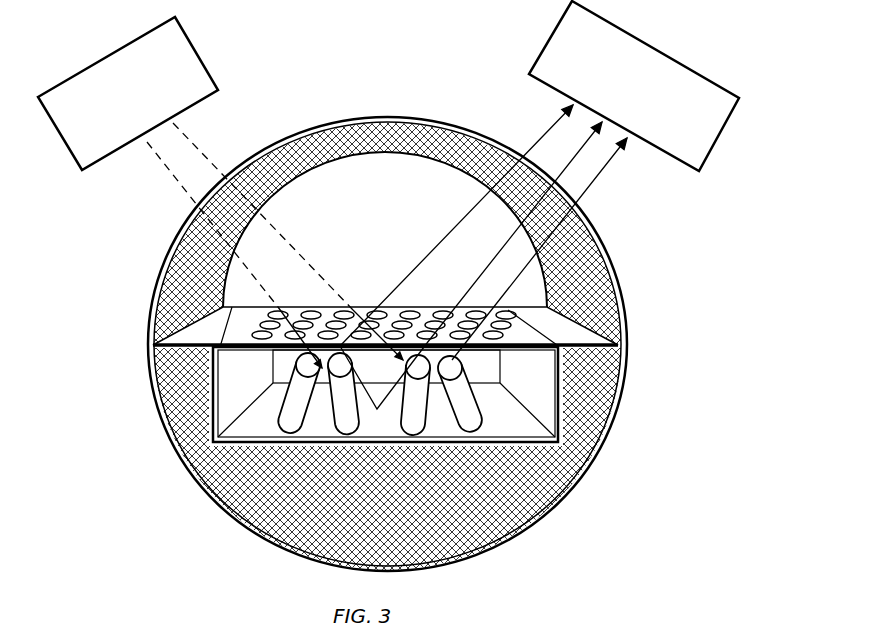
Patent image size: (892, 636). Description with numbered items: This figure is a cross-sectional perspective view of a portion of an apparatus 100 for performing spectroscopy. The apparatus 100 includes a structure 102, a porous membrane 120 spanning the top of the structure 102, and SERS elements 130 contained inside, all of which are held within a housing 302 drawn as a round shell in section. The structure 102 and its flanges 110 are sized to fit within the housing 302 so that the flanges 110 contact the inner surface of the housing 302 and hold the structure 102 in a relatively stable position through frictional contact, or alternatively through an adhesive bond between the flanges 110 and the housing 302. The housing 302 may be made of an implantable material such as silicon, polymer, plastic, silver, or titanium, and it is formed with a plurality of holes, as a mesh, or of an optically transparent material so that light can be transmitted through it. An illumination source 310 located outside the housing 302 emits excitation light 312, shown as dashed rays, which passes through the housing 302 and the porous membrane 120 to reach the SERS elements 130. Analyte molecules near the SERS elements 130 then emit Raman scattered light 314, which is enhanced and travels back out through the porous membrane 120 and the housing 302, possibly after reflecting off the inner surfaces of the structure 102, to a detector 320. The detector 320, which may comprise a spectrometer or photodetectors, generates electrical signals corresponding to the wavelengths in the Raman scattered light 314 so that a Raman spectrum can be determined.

The apparatus 100 is at (332, 60).
The structure 102 is at (202, 434).
The flanges 110 is at (580, 357).
The porous membrane 120 is at (548, 335).
The SERS elements 130 is at (438, 408).
The housing 302 is at (152, 372).
The illumination source 310 is at (128, 93).
The excitation light 312 is at (172, 168).
The Raman scattered light 314 is at (602, 167).
The detector 320 is at (634, 86).